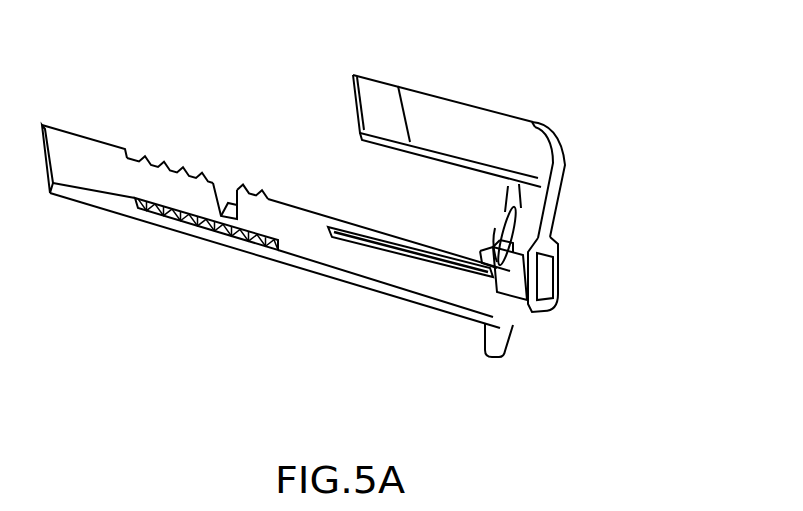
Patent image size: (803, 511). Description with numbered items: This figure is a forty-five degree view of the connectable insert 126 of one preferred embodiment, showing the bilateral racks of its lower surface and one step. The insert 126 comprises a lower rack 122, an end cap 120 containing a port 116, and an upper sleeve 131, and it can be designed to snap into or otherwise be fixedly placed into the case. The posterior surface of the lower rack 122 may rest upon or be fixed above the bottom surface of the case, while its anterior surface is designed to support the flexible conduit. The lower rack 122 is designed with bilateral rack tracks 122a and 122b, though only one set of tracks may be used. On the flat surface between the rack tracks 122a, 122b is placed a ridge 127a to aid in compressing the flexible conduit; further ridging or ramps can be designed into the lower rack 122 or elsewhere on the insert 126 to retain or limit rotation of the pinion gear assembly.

The lower rack 122 is at (85, 148).
The rack track 122a is at (153, 224).
The rack track 122b is at (157, 160).
The ridge 127a is at (230, 200).
The upper sleeve 131 is at (467, 120).
The end cap 120 is at (566, 194).
The port 116 is at (500, 224).
The insert 126 is at (545, 382).